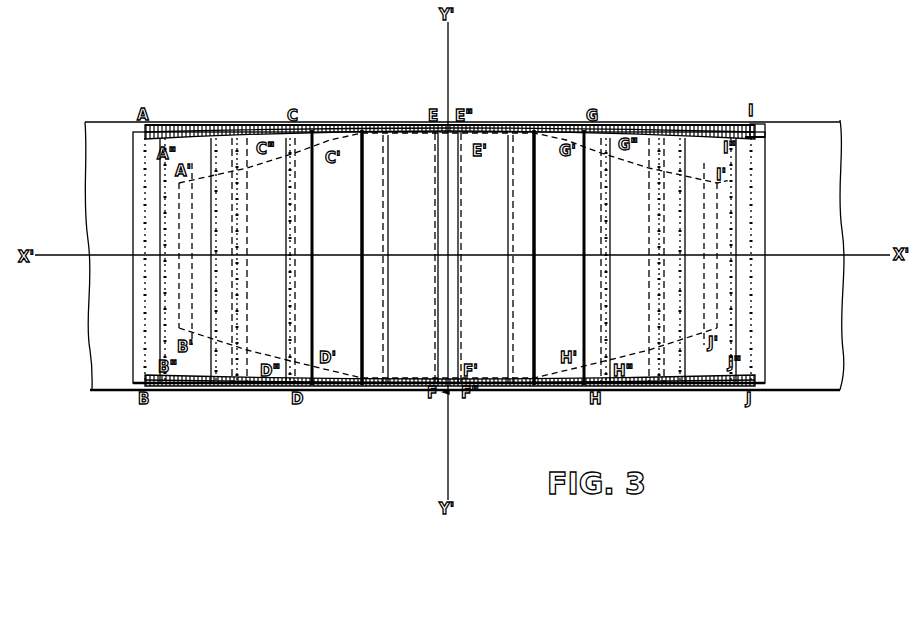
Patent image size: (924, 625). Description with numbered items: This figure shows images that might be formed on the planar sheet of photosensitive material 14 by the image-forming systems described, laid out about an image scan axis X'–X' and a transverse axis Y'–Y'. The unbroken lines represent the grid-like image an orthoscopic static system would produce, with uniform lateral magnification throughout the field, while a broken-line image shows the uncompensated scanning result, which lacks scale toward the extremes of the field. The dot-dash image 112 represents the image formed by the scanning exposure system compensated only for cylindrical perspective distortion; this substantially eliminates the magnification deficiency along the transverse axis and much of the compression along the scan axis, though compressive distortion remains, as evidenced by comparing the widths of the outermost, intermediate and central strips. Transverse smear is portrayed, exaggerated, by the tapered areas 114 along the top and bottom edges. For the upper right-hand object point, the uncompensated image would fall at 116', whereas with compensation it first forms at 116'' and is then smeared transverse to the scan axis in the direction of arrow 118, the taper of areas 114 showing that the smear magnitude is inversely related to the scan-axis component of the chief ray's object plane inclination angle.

The photosensitive material 14 is at (793, 140).
The dot-dash image 112 is at (770, 322).
The tapered areas 114 is at (201, 128).
The image point location without compensation 116' is at (761, 198).
The image point location with compensation 116'' is at (773, 102).
The direction arrow 118 is at (760, 128).